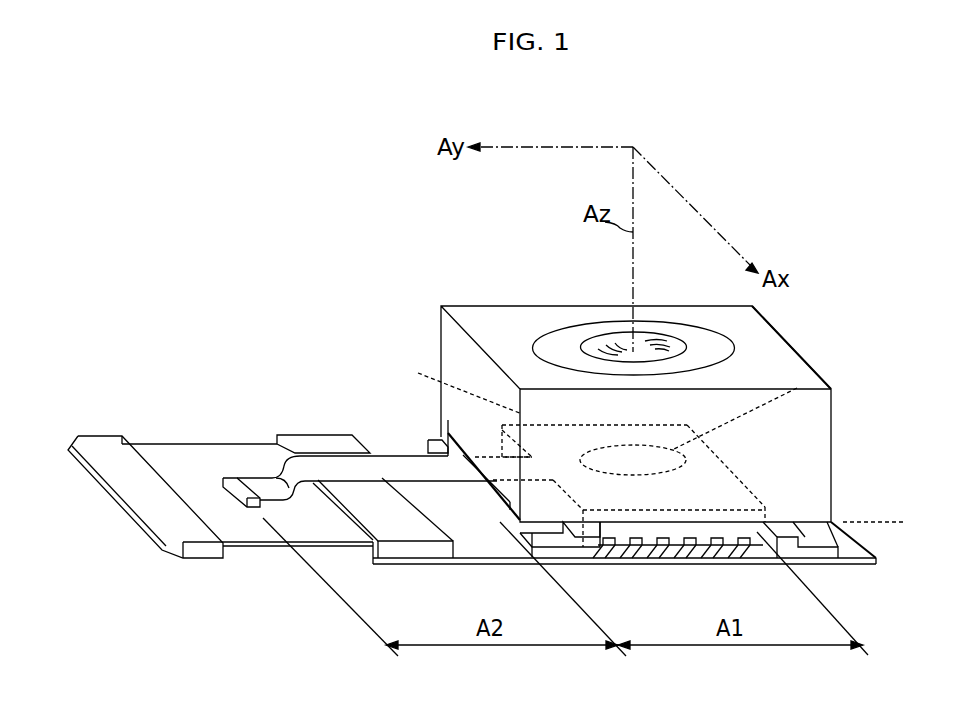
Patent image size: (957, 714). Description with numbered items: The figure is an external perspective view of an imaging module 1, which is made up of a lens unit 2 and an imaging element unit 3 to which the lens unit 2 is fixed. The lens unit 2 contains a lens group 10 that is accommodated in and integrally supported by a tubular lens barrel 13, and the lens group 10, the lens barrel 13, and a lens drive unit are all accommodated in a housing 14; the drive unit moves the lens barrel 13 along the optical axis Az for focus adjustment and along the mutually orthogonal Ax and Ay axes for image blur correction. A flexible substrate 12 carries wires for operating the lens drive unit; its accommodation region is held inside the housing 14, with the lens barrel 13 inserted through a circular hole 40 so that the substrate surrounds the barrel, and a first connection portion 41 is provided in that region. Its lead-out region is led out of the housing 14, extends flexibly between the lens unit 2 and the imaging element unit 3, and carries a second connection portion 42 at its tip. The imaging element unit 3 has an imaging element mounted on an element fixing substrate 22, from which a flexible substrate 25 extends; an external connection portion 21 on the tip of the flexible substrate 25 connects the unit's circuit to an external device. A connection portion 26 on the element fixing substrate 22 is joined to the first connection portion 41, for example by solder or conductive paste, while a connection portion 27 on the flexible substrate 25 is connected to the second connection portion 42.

The imaging module 1 is at (779, 183).
The lens unit 2 is at (911, 390).
The imaging element unit 3 is at (911, 523).
The lens group 10 is at (645, 328).
The flexible substrate 12 is at (314, 443).
The lens barrel 13 is at (568, 335).
The housing 14 is at (785, 353).
The external connection portion 21 is at (197, 560).
The element fixing substrate 22 is at (505, 563).
The flexible substrate 25 is at (178, 465).
The connection portion 26 is at (635, 558).
The connection portion 27 is at (250, 517).
The circular hole 40 is at (797, 388).
The first connection portion 41 is at (418, 372).
The second connection portion 42 is at (232, 475).